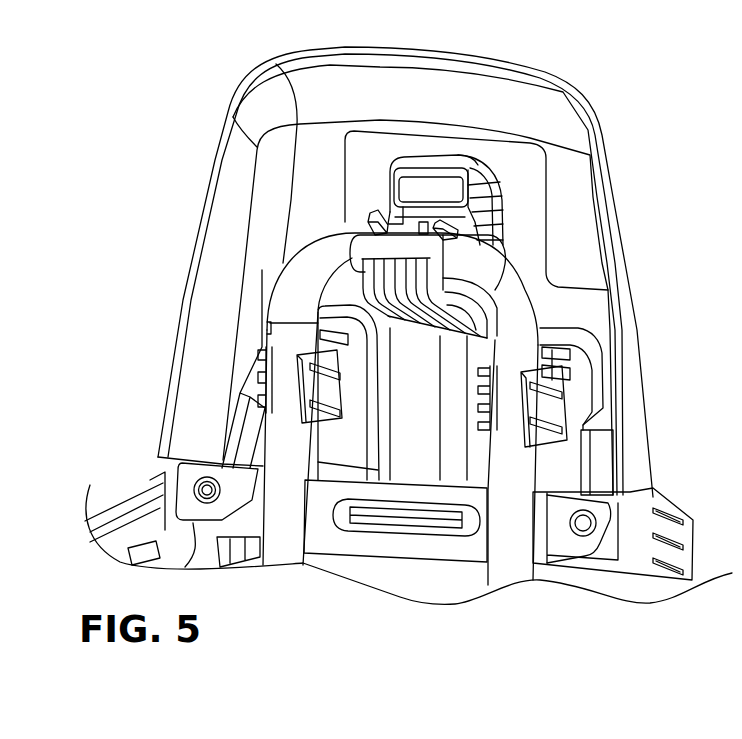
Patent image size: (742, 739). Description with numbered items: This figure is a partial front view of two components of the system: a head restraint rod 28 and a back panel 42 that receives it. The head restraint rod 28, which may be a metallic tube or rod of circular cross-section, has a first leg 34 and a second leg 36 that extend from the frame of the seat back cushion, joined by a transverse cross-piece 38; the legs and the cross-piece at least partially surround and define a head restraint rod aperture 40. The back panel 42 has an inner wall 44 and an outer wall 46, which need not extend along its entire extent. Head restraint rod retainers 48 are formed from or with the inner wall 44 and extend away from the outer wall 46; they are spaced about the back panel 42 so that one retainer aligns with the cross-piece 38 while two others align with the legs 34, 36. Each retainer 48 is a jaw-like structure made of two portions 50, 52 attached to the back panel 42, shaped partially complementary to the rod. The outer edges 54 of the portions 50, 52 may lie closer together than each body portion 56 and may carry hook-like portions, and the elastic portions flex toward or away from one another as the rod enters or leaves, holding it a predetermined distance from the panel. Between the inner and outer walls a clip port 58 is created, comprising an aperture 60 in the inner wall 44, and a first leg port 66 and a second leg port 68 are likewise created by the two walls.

The head restraint rod 28 is at (517, 573).
The first leg 34 is at (280, 553).
The second leg 36 is at (493, 583).
The transverse cross-piece 38 is at (503, 261).
The head restraint rod aperture 40 is at (379, 570).
The back panel 42 is at (630, 272).
The inner wall 44 is at (597, 373).
The outer wall 46 is at (588, 227).
The head restraint rod retainers 48 is at (367, 212).
The portion 50 is at (466, 213).
The portion 52 is at (443, 287).
The outer edges 54 is at (363, 262).
The body portion 56 is at (473, 315).
The clip port 58 is at (440, 170).
The aperture 60 is at (422, 182).
The first leg port 66 is at (263, 457).
The second leg port 68 is at (600, 453).